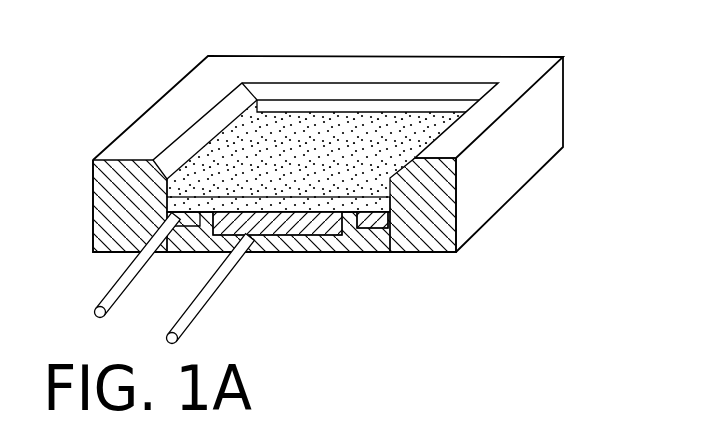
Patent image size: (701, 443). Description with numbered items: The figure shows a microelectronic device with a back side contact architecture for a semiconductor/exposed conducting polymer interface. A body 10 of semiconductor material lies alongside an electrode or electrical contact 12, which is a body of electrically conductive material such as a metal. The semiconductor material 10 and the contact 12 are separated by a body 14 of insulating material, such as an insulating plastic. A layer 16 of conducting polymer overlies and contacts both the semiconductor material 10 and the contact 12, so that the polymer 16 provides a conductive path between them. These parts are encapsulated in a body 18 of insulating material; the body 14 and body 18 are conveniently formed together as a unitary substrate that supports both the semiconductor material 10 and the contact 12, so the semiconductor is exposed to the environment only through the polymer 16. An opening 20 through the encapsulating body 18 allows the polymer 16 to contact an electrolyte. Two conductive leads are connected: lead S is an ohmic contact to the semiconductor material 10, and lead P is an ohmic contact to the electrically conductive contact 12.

The body of semiconductor material 10 is at (305, 228).
The electrical contact 12 is at (167, 222).
The body of insulating material 14 is at (345, 218).
The layer of conducting polymer 16 is at (390, 207).
The encapsulating body of insulating material 18 is at (540, 120).
The opening 20 is at (437, 105).
The lead to the electrically conductive contact P is at (108, 295).
The lead to the semiconductor material S is at (210, 298).